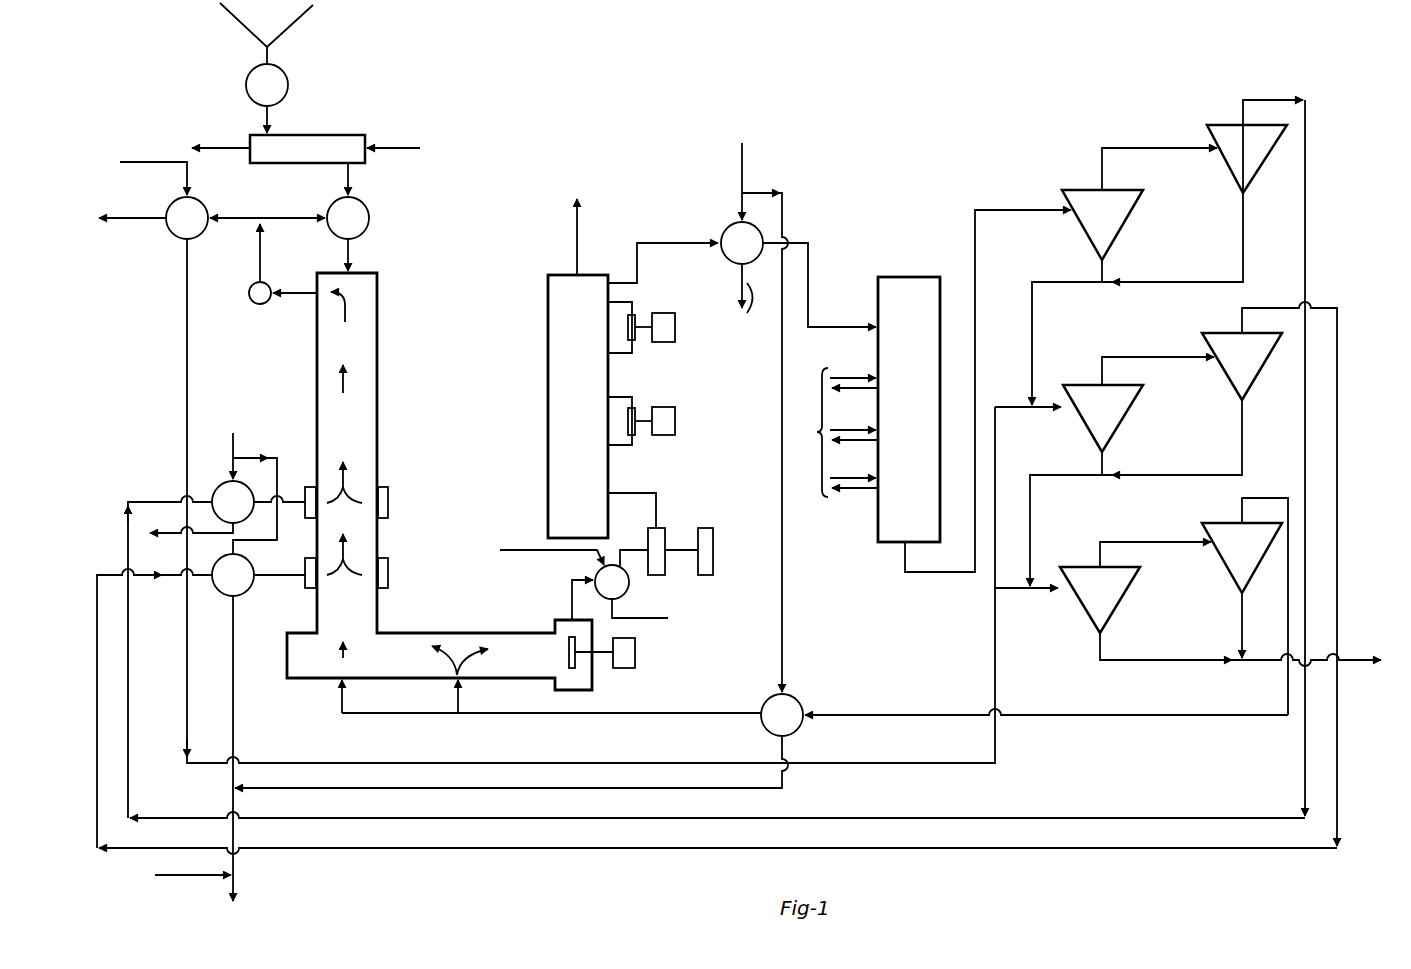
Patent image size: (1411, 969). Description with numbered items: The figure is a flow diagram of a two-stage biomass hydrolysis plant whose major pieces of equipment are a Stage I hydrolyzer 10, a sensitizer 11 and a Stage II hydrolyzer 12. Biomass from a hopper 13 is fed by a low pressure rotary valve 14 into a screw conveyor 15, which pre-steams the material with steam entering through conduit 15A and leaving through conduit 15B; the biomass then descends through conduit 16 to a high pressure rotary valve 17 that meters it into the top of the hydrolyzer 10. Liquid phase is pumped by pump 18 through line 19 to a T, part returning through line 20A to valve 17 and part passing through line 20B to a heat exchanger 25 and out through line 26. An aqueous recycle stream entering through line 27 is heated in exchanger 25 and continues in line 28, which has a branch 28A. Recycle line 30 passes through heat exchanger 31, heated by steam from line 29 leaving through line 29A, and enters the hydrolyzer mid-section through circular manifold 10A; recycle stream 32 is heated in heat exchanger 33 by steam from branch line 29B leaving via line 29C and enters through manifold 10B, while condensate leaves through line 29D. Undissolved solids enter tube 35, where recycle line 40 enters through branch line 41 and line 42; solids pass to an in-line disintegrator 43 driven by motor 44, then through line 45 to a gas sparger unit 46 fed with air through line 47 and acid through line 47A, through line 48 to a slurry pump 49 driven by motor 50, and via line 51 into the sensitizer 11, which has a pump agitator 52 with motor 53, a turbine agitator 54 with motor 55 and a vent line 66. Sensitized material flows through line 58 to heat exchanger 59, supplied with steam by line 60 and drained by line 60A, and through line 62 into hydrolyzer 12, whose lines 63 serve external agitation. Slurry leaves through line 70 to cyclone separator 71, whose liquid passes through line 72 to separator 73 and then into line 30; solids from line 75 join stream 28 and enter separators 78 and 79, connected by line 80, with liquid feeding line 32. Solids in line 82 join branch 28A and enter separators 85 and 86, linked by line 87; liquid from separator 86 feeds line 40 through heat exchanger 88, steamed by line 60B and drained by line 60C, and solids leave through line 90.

The Stage I hydrolyzer 10 is at (382, 329).
The circular manifold 10A is at (389, 510).
The manifold 10B is at (389, 583).
The sensitizer 11 is at (537, 329).
The Stage II hydrolyzer 12 is at (909, 272).
The hopper 13 is at (301, 23).
The low pressure rotary valve 14 is at (275, 98).
The screw conveyor 15 is at (300, 134).
The conduit 15A is at (404, 147).
The conduit 15B is at (226, 147).
The conduit 16 is at (354, 170).
The high pressure rotary valve 17 is at (356, 231).
The pump 18 is at (248, 293).
The line 19 is at (300, 295).
The line 20A is at (294, 212).
The line 20B is at (241, 212).
The heat exchanger 25 is at (195, 231).
The line 26 is at (158, 212).
The line 27 is at (166, 157).
The line 28 is at (186, 304).
The branch 28A is at (1030, 592).
The line 29 is at (233, 445).
The line 29A is at (178, 532).
The branch line 29B is at (280, 533).
The line 29C is at (262, 714).
The line 29D is at (236, 869).
The recycle line 30 is at (146, 500).
The heat exchanger 31 is at (241, 515).
The recycle line 32 is at (110, 574).
The heat exchanger 33 is at (241, 588).
The tube 35 is at (400, 663).
The recycle line 40 is at (536, 713).
The branch line 41 is at (456, 705).
The line 42 is at (342, 706).
The in-line disintegrator 43 is at (568, 655).
The motor 44 is at (636, 652).
The line 45 is at (565, 590).
The gas sparger unit 46 is at (629, 585).
The line 47 is at (661, 619).
The line 47A is at (524, 550).
The line 48 is at (623, 549).
The slurry pump 49 is at (666, 535).
The motor 50 is at (714, 550).
The line 51 is at (644, 494).
The pump agitator 52 is at (636, 410).
The motor 53 is at (677, 426).
The turbine agitator 54 is at (637, 317).
The motor 55 is at (676, 325).
The line 58 is at (640, 243).
The heat exchanger 59 is at (728, 229).
The line 60 is at (745, 170).
The line 60A is at (749, 304).
The line 60B is at (786, 208).
The line 60C is at (712, 790).
The line 62 is at (812, 295).
The lines 63 is at (833, 432).
The line 66 is at (576, 234).
The line 70 is at (1005, 209).
The cyclone separator 71 is at (1110, 227).
The line 72 is at (1143, 147).
The cyclone separator 73 is at (1251, 162).
The line 75 is at (1042, 280).
The cyclone separator 78 is at (1110, 422).
The cyclone separator 79 is at (1250, 370).
The line 80 is at (1154, 355).
The line 82 is at (1052, 474).
The cyclone separator 85 is at (1110, 603).
The cyclone separator 86 is at (1252, 559).
The line 87 is at (1148, 541).
The heat exchanger 88 is at (790, 728).
The line 90 is at (1352, 658).